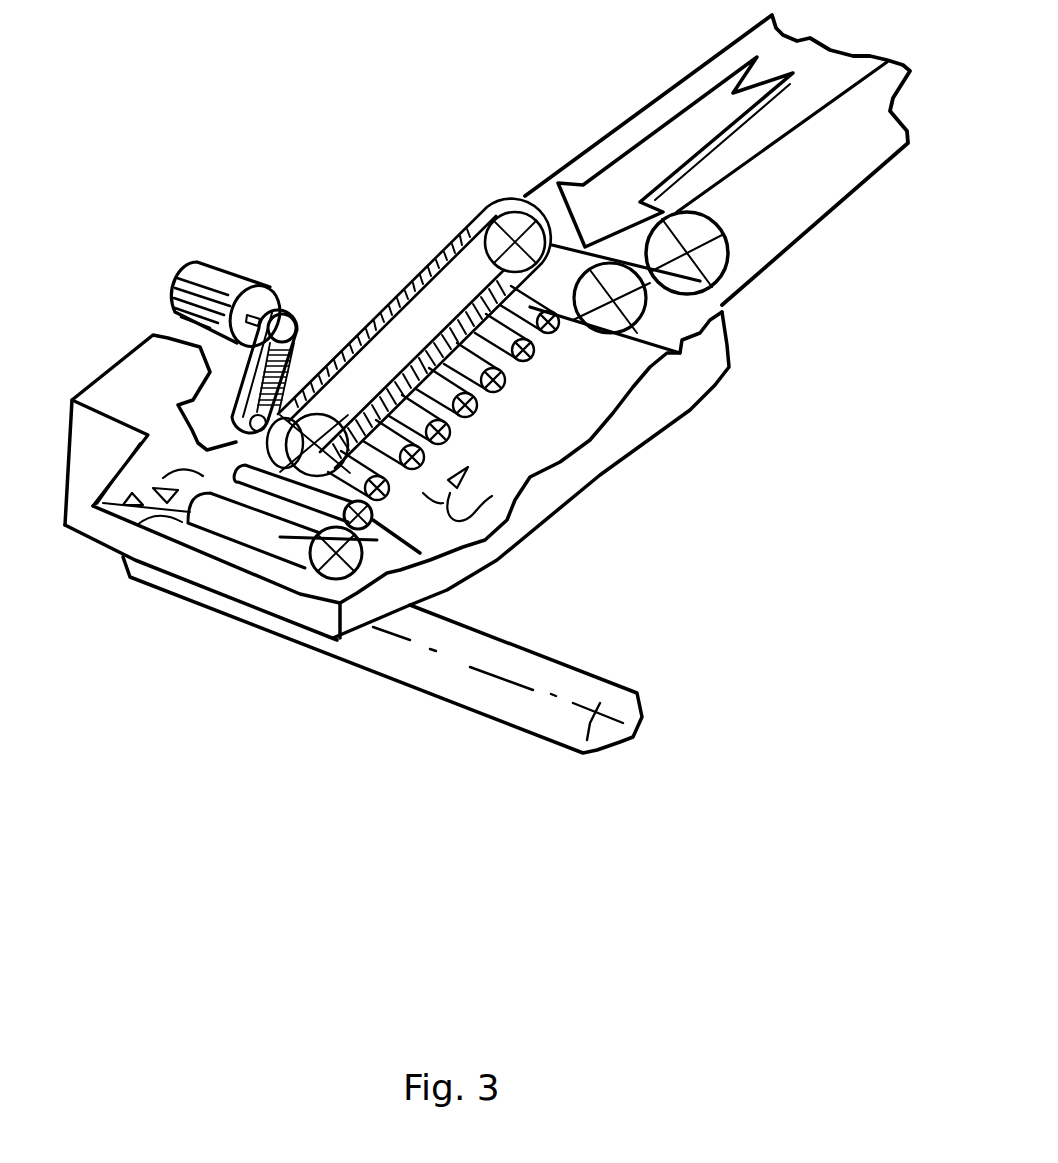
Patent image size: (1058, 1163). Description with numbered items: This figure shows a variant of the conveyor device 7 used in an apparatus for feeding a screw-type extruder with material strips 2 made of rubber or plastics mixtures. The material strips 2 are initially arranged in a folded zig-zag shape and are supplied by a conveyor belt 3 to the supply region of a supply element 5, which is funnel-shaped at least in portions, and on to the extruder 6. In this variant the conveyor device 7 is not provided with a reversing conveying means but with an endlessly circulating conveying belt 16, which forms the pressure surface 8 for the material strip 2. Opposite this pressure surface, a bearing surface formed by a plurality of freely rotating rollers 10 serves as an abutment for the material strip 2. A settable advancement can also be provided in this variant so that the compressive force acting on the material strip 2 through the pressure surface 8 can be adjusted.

The material strip 2 is at (663, 138).
The conveyor belt 3 is at (792, 230).
The supply element 5 is at (132, 343).
The extruder 6 is at (260, 625).
The conveyor device 7 is at (502, 183).
The pressure surface 8 is at (402, 385).
The rollers 10 is at (535, 365).
The conveying belt 16 is at (392, 293).